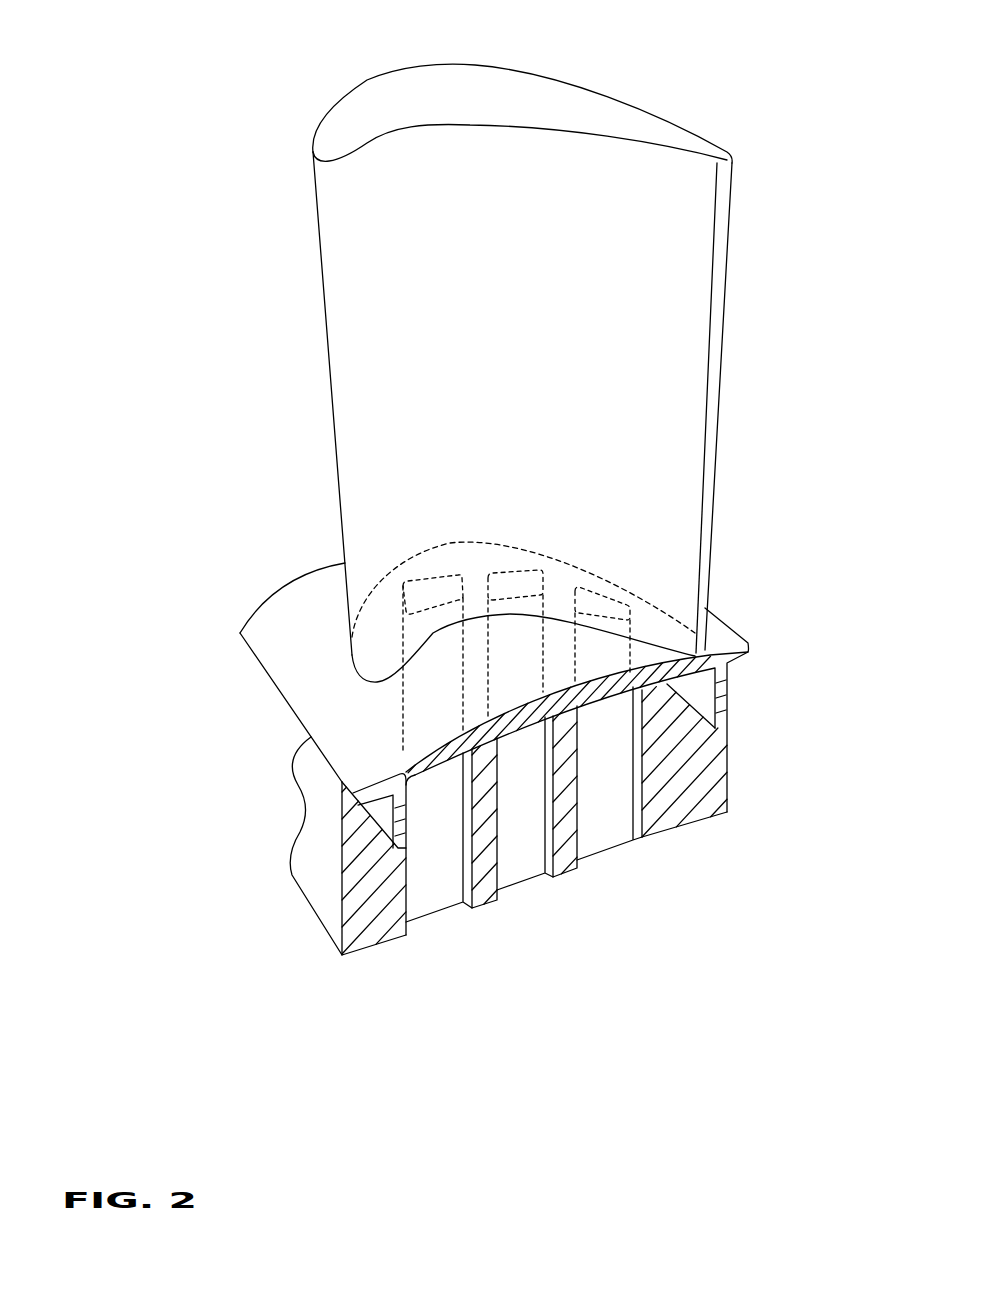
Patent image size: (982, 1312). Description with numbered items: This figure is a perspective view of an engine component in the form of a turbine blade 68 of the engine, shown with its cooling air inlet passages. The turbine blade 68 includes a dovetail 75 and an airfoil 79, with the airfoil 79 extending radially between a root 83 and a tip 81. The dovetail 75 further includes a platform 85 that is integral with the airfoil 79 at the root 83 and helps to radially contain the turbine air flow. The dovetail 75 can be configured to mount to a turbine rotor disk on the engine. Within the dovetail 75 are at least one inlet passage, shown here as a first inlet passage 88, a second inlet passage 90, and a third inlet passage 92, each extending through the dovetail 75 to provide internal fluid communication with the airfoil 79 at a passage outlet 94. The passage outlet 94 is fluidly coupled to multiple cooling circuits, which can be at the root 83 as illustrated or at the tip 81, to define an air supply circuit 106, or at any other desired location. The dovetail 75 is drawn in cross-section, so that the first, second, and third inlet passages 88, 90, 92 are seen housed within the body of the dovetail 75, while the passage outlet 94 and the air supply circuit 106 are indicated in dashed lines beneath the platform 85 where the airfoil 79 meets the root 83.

The turbine blade 68 is at (168, 166).
The dovetail 75 is at (328, 836).
The airfoil 79 is at (452, 333).
The tip 81 is at (407, 107).
The root 83 is at (660, 633).
The platform 85 is at (307, 667).
The first inlet passage 88 is at (442, 922).
The second inlet passage 90 is at (525, 900).
The third inlet passage 92 is at (603, 865).
The passage outlet 94 is at (422, 580).
The air supply circuit 106 is at (620, 546).